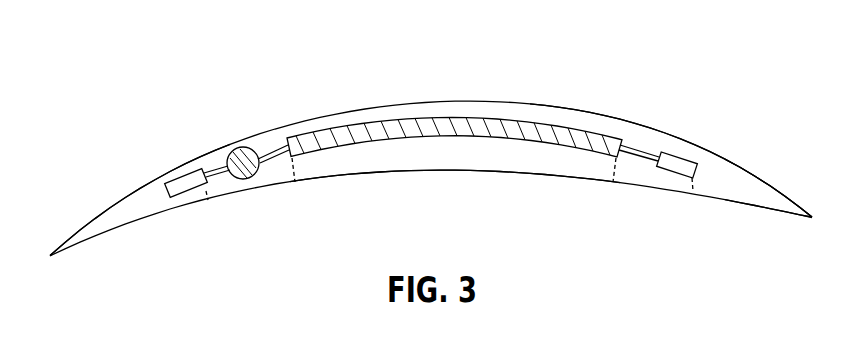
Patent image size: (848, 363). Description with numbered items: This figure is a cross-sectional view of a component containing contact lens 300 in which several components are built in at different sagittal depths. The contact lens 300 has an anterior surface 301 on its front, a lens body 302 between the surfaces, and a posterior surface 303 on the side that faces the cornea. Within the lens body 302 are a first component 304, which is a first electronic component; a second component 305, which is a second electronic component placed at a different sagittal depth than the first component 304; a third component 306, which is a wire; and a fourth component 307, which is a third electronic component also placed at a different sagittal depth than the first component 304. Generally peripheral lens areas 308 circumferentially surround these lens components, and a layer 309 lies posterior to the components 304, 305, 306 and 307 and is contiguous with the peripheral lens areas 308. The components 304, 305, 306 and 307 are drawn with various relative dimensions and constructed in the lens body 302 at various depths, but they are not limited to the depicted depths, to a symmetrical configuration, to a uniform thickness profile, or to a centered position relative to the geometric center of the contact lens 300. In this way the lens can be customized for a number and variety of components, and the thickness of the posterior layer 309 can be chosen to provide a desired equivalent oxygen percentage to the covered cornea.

The component containing contact lens 300 is at (110, 38).
The anterior surface 301 is at (675, 137).
The lens body 302 is at (748, 187).
The posterior surface 303 is at (723, 200).
The first component 304 is at (477, 128).
The second component 305 is at (242, 147).
The third component 306 is at (633, 157).
The fourth component 307 is at (163, 192).
The peripheral lens areas 308 is at (137, 192).
The layer 309 is at (338, 160).